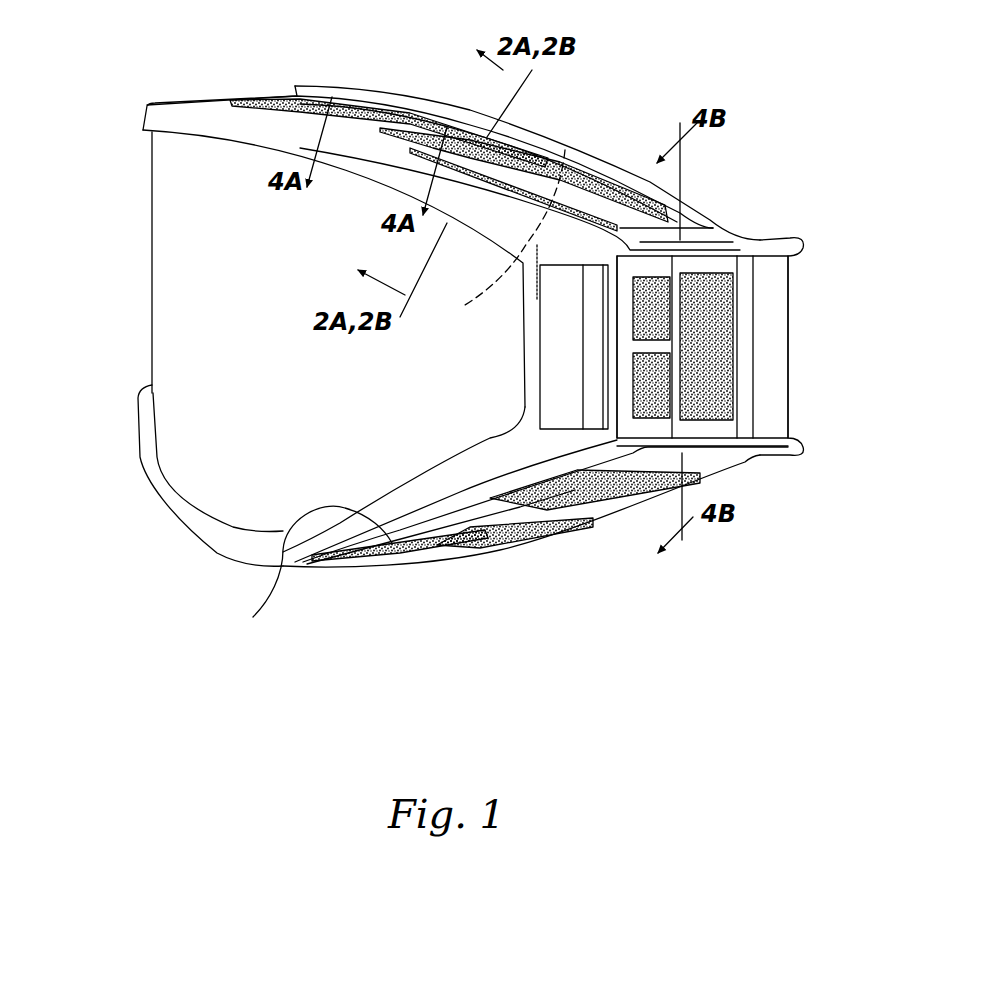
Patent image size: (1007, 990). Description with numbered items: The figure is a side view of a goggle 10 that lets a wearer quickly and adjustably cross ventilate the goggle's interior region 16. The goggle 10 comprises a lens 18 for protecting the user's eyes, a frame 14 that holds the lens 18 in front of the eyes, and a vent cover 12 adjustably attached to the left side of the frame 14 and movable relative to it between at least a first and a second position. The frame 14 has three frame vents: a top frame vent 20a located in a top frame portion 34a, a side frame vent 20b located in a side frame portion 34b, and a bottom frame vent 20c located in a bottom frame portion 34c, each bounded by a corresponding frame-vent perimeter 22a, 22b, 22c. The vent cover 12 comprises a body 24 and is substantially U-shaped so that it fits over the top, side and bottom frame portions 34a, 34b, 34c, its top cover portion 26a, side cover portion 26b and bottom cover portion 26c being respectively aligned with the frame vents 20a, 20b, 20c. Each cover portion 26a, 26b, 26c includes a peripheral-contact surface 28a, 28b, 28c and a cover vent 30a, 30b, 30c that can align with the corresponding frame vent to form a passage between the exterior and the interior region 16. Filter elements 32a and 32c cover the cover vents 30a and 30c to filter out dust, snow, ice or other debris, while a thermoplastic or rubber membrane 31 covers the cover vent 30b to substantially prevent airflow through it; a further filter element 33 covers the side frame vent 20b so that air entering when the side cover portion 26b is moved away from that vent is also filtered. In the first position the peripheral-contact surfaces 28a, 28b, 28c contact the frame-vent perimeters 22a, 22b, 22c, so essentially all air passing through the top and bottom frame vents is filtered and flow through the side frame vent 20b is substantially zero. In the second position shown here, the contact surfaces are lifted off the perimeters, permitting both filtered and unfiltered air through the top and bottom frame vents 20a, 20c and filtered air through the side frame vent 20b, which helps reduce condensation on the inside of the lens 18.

The goggle 10 is at (185, 592).
The vent cover 12 is at (752, 192).
The frame 14 is at (145, 115).
The interior region 16 is at (582, 143).
The lens 18 is at (150, 263).
The top frame vent 20a is at (445, 165).
The side frame vent 20b is at (635, 398).
The bottom frame vent 20c is at (437, 517).
The frame-vent perimeter 22a is at (530, 128).
The frame-vent perimeter 22b is at (635, 268).
The frame-vent perimeter 22c is at (445, 548).
The body 24 is at (790, 305).
The top cover portion 26a is at (245, 102).
The side cover portion 26b is at (748, 333).
The bottom cover portion 26c is at (580, 533).
The peripheral-contact surface 28a is at (425, 150).
The peripheral-contact surface 28b is at (635, 360).
The peripheral-contact surface 28c is at (306, 574).
The cover vent 30a is at (427, 115).
The cover vent 30b is at (735, 410).
The cover vent 30c is at (497, 545).
The membrane 31 is at (738, 390).
The filter element 32a is at (627, 203).
The filter element 32c is at (375, 562).
The filter element 33 is at (680, 300).
The top frame portion 34a is at (245, 141).
The side frame portion 34b is at (525, 322).
The bottom frame portion 34c is at (463, 450).